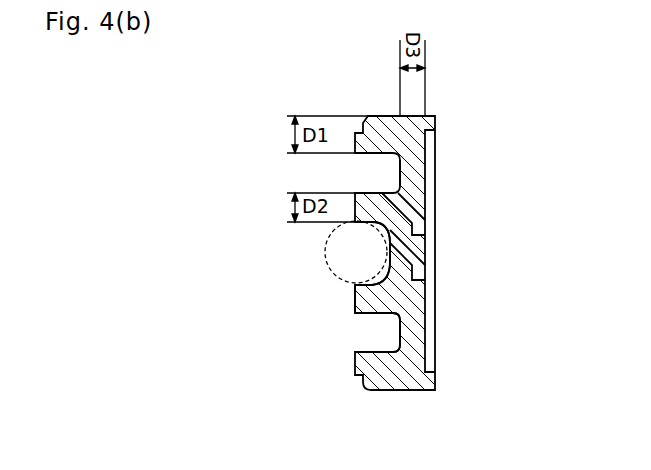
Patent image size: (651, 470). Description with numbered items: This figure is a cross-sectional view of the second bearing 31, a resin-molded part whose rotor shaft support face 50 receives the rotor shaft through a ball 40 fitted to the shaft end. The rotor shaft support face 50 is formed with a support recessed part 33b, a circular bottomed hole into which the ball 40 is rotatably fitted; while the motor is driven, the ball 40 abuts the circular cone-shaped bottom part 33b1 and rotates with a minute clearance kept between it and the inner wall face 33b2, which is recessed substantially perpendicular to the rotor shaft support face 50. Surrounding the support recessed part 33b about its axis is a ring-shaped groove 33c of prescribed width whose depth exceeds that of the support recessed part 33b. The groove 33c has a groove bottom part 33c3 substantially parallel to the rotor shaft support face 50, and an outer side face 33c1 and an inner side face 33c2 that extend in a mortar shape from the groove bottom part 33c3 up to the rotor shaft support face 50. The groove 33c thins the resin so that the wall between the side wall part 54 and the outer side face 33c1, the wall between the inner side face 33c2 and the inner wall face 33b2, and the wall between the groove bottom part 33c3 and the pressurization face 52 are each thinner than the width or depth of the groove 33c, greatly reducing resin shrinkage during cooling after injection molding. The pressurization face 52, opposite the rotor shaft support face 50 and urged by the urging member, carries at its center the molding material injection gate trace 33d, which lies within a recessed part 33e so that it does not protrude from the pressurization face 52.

The second bearing 31 is at (283, 72).
The support recessed part 33b is at (372, 278).
The circular cone-shaped bottom part 33b1 is at (386, 241).
The inner wall face 33b2 is at (375, 224).
The groove 33c is at (371, 348).
The outer side face 33c1 is at (372, 157).
The inner side face 33c2 is at (403, 182).
The groove bottom part 33c3 is at (372, 158).
The molding material injection gate trace 33d is at (425, 237).
The recessed part 33e is at (425, 280).
The ball 40 is at (327, 258).
The rotor shaft support face 50 is at (355, 313).
The pressurization face 52 is at (425, 312).
The side wall part 54 is at (397, 392).